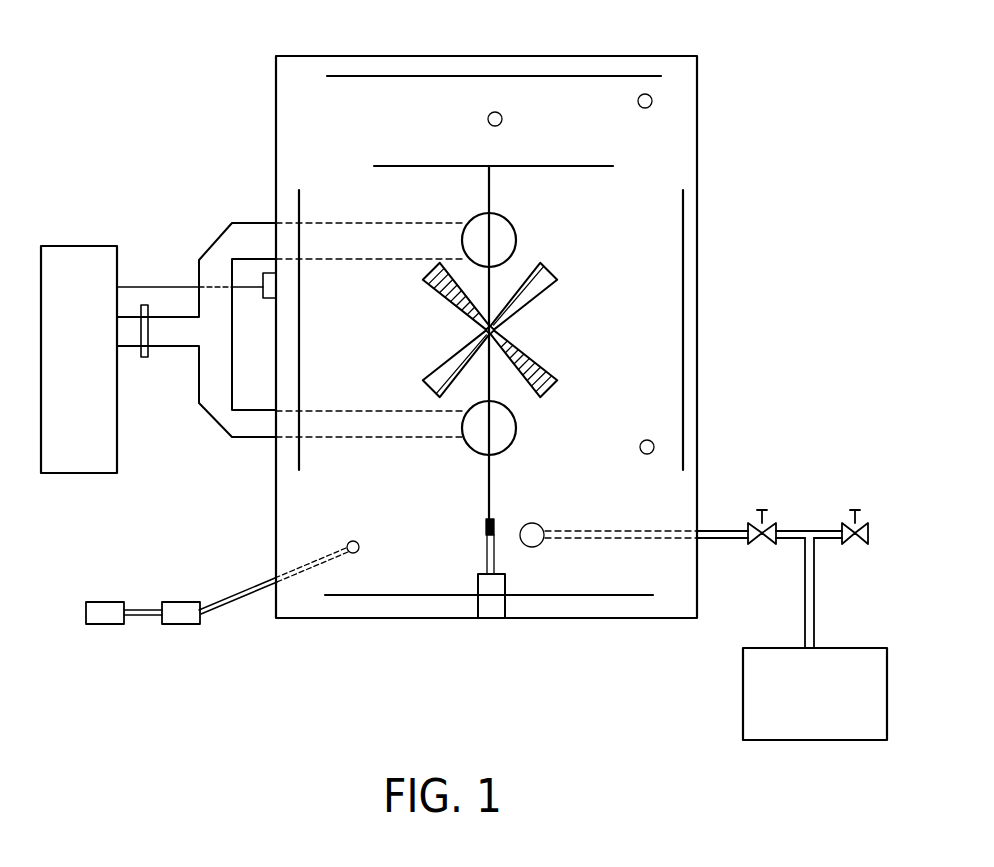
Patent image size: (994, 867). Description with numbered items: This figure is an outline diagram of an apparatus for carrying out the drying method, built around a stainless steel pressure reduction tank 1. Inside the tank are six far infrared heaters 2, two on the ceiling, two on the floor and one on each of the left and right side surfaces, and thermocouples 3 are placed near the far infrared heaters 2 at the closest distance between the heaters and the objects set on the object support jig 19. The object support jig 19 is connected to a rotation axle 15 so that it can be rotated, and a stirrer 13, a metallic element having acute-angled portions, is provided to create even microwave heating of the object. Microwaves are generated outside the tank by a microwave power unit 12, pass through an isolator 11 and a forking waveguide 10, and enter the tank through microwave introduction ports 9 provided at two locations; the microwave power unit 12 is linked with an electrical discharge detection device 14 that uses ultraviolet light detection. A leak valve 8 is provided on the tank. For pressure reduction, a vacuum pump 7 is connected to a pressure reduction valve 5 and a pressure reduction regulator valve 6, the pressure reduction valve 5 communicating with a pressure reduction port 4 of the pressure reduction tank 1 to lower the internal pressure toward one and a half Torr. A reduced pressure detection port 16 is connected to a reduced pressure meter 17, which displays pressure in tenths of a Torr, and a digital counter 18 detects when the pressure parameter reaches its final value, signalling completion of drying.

The pressure reduction tank 1 is at (298, 117).
The far infrared heaters 2 is at (398, 77).
The thermocouples 3 is at (652, 100).
The pressure reduction port 4 is at (540, 522).
The pressure reduction valve 5 is at (762, 512).
The pressure reduction regulator valve 6 is at (855, 512).
The vacuum pump 7 is at (743, 687).
The leak valve 8 is at (497, 112).
The microwave introduction ports 9 is at (510, 222).
The forking waveguide 10 is at (235, 240).
The isolator 11 is at (142, 357).
The microwave power unit 12 is at (88, 476).
The stirrer 13 is at (545, 290).
The electrical discharge detection device 14 is at (272, 298).
The rotation axle 15 is at (485, 562).
The reduced pressure detection port 16 is at (352, 541).
The reduced pressure meter 17 is at (193, 612).
The digital counter 18 is at (103, 620).
The object support jig 19 is at (430, 165).